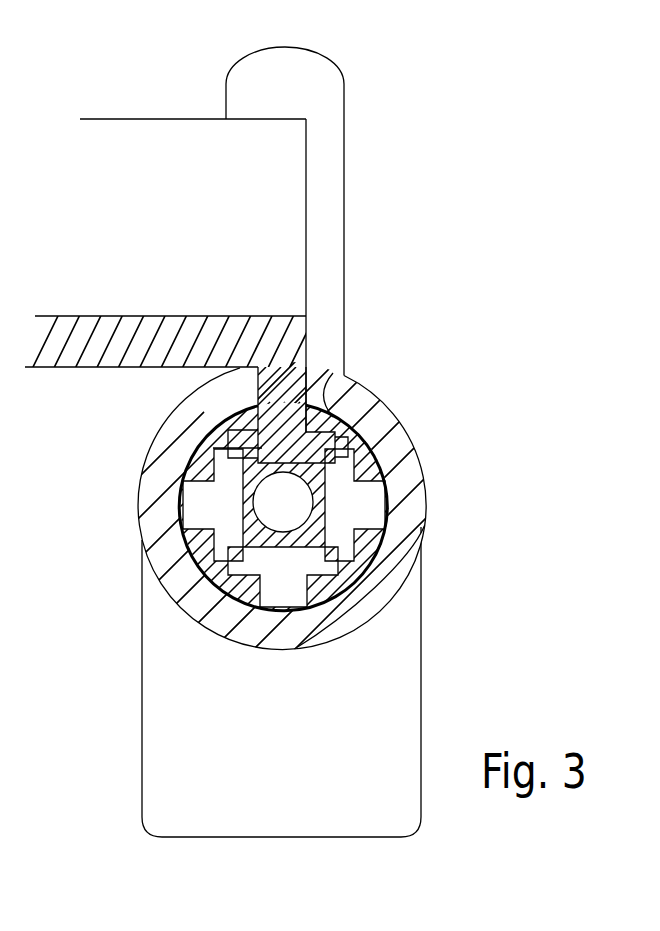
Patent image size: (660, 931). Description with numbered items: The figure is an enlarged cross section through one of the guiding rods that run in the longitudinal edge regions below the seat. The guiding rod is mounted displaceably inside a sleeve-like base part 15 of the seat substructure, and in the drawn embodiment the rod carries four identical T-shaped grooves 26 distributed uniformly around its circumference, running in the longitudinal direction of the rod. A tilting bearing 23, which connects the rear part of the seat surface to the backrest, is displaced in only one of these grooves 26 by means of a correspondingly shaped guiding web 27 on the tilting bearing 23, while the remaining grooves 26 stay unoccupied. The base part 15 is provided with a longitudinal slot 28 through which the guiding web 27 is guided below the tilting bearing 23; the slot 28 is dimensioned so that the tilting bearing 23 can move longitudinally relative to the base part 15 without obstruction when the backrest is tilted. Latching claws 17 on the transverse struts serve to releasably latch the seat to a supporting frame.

The base part 15 is at (393, 447).
The latching claw 17 is at (357, 543).
The tilting bearing 23 is at (78, 352).
The T-shaped groove 26 is at (333, 374).
The guiding web 27 is at (213, 450).
The longitudinal slot 28 is at (325, 420).